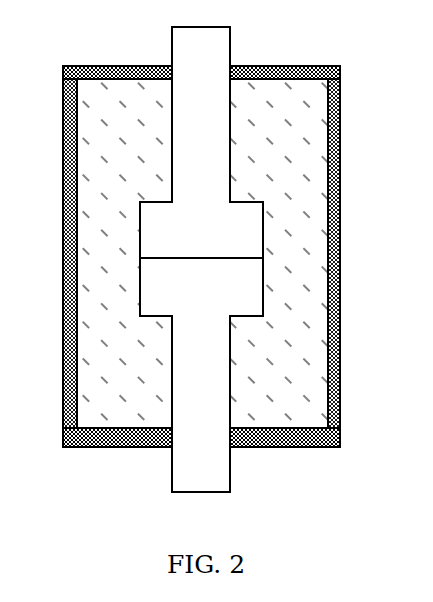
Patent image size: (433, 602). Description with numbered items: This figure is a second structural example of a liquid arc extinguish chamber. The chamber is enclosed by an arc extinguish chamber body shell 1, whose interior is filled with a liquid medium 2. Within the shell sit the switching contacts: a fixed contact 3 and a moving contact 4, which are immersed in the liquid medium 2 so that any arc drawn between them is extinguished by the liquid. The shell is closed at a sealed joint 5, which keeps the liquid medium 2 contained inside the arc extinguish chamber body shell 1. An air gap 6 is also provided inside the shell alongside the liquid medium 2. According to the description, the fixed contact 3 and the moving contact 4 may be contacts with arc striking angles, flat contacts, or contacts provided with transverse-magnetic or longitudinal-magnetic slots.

The arc extinguish chamber body shell 1 is at (346, 331).
The liquid medium 2 is at (312, 241).
The fixed contact 3 is at (259, 184).
The moving contact 4 is at (126, 274).
The sealed joint 5 is at (156, 456).
The air gap 6 is at (90, 79).